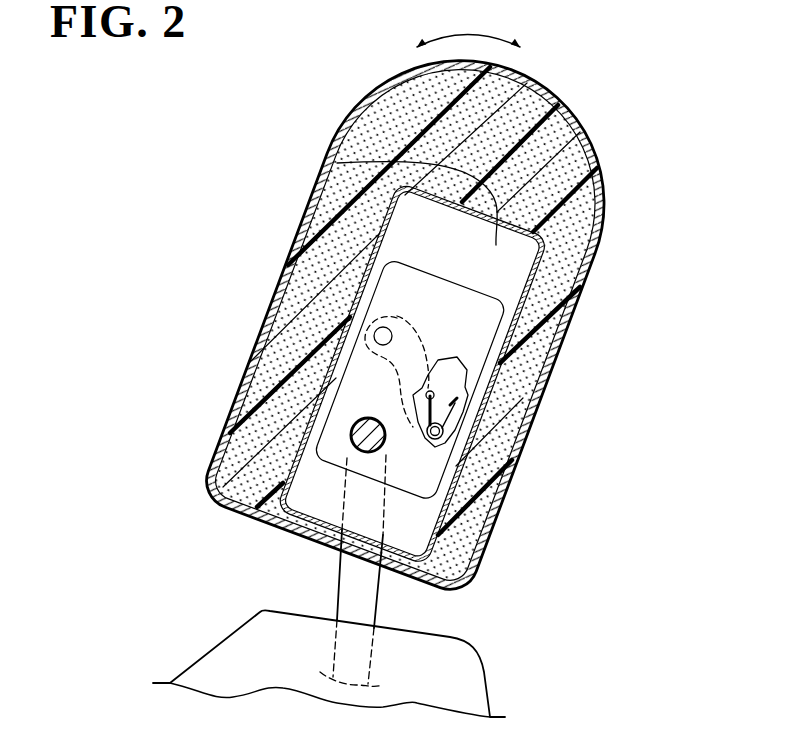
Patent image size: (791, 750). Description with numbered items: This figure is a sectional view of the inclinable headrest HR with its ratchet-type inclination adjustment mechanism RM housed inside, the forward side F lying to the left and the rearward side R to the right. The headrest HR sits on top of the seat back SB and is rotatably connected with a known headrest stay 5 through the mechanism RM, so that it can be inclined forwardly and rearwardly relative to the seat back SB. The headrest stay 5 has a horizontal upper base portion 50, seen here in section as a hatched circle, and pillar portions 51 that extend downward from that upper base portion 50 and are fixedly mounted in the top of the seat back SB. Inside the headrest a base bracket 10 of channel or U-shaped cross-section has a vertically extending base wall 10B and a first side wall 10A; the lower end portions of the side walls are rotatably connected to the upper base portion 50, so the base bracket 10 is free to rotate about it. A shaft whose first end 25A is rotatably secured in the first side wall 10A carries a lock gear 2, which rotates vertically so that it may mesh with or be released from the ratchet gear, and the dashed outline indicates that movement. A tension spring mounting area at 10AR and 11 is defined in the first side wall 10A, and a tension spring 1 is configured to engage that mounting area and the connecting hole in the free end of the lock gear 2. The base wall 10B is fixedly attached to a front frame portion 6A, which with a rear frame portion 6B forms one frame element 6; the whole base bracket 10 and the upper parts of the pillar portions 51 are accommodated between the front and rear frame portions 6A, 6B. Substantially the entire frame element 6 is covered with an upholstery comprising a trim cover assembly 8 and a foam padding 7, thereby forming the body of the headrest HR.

The tension spring 1 is at (437, 445).
The lock gear 2 is at (381, 366).
The headrest stay 5 is at (312, 583).
The frame element 6 is at (227, 110).
The front frame portion 6A is at (398, 212).
The rear frame portion 6B is at (337, 163).
The foam padding 7 is at (268, 381).
The trim cover assembly 8 is at (272, 303).
The base bracket 10 is at (490, 295).
The first side wall 10A is at (393, 290).
The base wall 10B is at (400, 263).
The tension spring mounting area 10AR is at (425, 442).
The tension spring mounting area 11 is at (455, 368).
The first end of shaft 25A is at (385, 328).
The horizontal upper base portion 50 is at (353, 448).
The pillar portion 51 is at (367, 604).
The inclinable headrest HR is at (374, 92).
The ratchet-type inclination adjustment mechanism RM is at (510, 262).
The seat back SB is at (531, 637).
The forward side F is at (108, 302).
The rearward side R is at (657, 354).